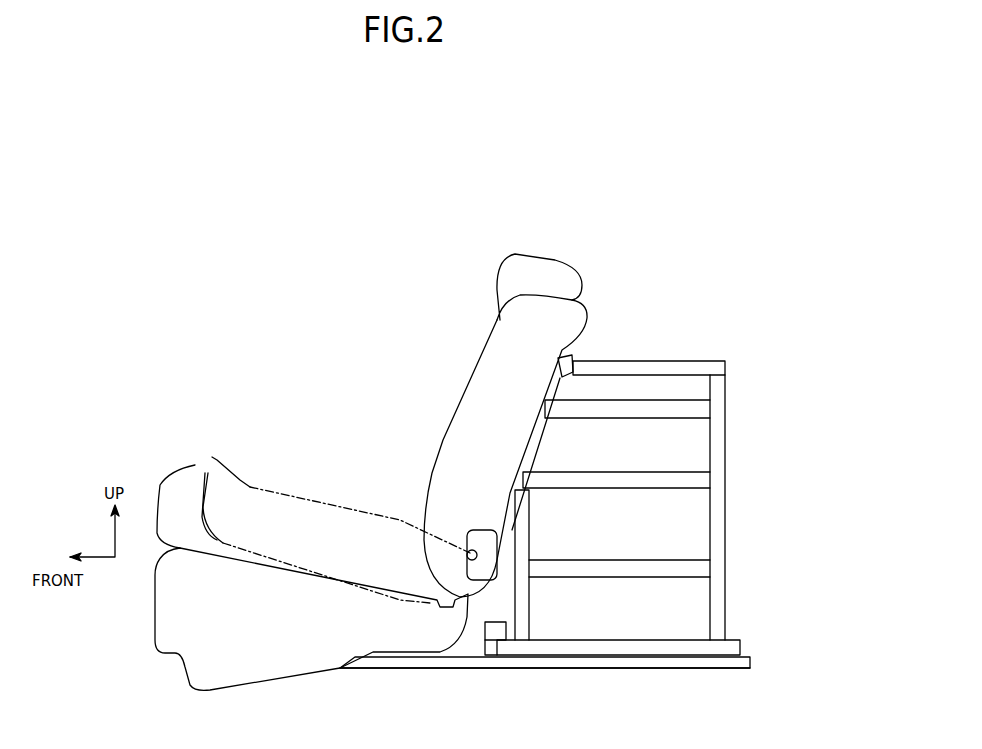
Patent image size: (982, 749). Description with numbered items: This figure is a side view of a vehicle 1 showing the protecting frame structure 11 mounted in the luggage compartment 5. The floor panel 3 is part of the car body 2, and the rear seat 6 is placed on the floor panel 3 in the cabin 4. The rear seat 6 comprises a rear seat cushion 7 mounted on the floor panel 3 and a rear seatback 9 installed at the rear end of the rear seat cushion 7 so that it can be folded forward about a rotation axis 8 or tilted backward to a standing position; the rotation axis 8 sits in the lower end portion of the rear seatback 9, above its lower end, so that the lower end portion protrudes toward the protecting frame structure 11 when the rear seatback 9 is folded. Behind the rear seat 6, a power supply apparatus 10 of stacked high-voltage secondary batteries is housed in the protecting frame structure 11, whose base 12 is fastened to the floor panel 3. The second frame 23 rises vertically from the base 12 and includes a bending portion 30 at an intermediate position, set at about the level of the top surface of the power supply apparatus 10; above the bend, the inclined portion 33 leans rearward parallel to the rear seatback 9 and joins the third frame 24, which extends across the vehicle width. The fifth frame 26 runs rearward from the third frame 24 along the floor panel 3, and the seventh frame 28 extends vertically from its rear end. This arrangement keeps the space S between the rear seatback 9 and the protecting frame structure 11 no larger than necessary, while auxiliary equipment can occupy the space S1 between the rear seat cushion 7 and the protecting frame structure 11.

The vehicle 1 is at (135, 287).
The car body 2 is at (750, 666).
The floor panel 3 is at (450, 669).
The cabin 4 is at (289, 314).
The luggage compartment 5 is at (666, 308).
The rear seat 6 is at (218, 419).
The rear seat cushion 7 is at (157, 590).
The rotation axis 8 is at (412, 522).
The rear seatback 9 is at (488, 350).
The power supply apparatus 10 is at (693, 527).
The protecting frame structure 11 is at (725, 364).
The base 12 is at (738, 640).
The second frame 23 is at (537, 538).
The third frame 24 is at (572, 356).
The fifth frame 26 is at (673, 362).
The seventh frame 28 is at (718, 425).
The bending portion 30 is at (523, 497).
The inclined portion 33 is at (546, 436).
The space S is at (508, 520).
The space S1 is at (485, 623).